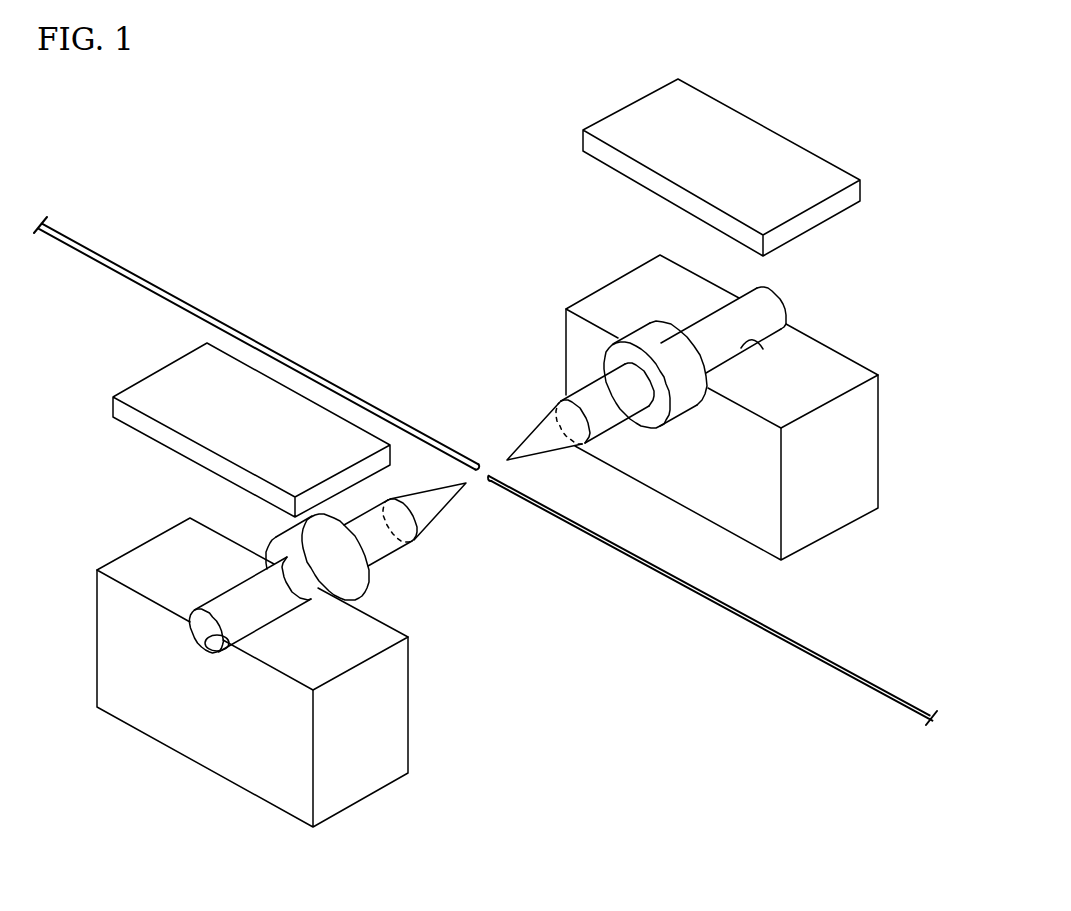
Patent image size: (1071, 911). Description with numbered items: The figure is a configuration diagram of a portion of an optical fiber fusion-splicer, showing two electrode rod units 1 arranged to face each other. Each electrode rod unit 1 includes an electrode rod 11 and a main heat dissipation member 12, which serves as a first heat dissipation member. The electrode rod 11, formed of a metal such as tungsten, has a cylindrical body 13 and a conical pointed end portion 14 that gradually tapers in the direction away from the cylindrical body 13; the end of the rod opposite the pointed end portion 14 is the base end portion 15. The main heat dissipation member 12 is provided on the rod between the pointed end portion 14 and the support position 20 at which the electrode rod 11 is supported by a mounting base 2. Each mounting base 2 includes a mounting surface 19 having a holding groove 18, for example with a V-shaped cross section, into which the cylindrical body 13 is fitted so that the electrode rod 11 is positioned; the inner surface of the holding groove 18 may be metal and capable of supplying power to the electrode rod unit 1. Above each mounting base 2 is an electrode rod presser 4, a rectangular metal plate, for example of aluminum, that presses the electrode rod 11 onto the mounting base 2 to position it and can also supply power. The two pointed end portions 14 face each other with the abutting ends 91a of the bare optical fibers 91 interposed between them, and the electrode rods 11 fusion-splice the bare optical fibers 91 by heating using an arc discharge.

The electrode rod unit 1 is at (498, 510).
The mounting base 2 is at (485, 541).
The electrode rod presser 4 is at (581, 141).
The electrode rod 11 is at (481, 434).
The main heat dissipation member 12 is at (648, 343).
The cylindrical body 13 is at (618, 410).
The pointed end portion 14 is at (567, 432).
The base end portion 15 is at (786, 316).
The holding groove 18 is at (762, 346).
The mounting surface 19 is at (815, 349).
The support position 20 is at (713, 313).
The bare optical fiber 91 is at (138, 275).
The end of bare optical fiber 91a is at (491, 452).